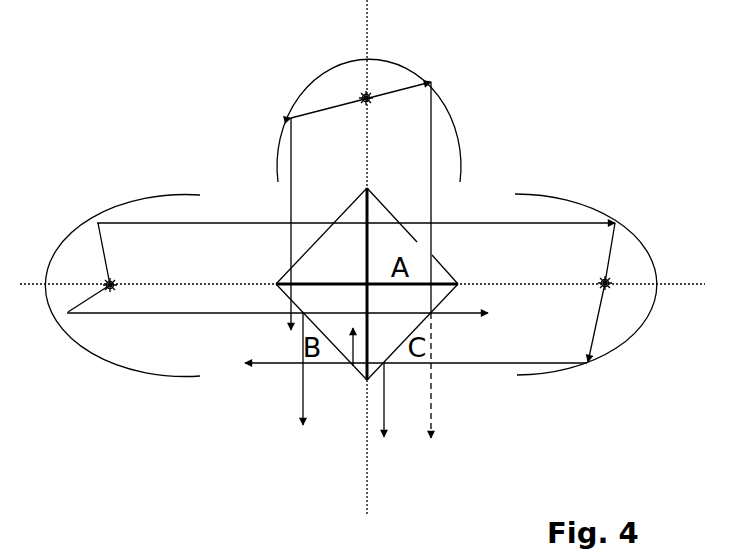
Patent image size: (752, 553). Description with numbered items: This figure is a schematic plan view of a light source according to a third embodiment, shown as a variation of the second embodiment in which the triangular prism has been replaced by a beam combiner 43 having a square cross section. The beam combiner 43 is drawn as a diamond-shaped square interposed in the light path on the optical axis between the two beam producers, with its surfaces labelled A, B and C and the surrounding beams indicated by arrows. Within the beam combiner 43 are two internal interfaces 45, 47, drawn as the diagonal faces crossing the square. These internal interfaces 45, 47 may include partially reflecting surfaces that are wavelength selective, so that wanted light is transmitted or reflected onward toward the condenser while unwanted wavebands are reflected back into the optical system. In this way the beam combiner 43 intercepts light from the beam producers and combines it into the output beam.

The beam combiner 43 is at (247, 318).
The internal interface 45 is at (330, 258).
The internal interface 47 is at (312, 300).